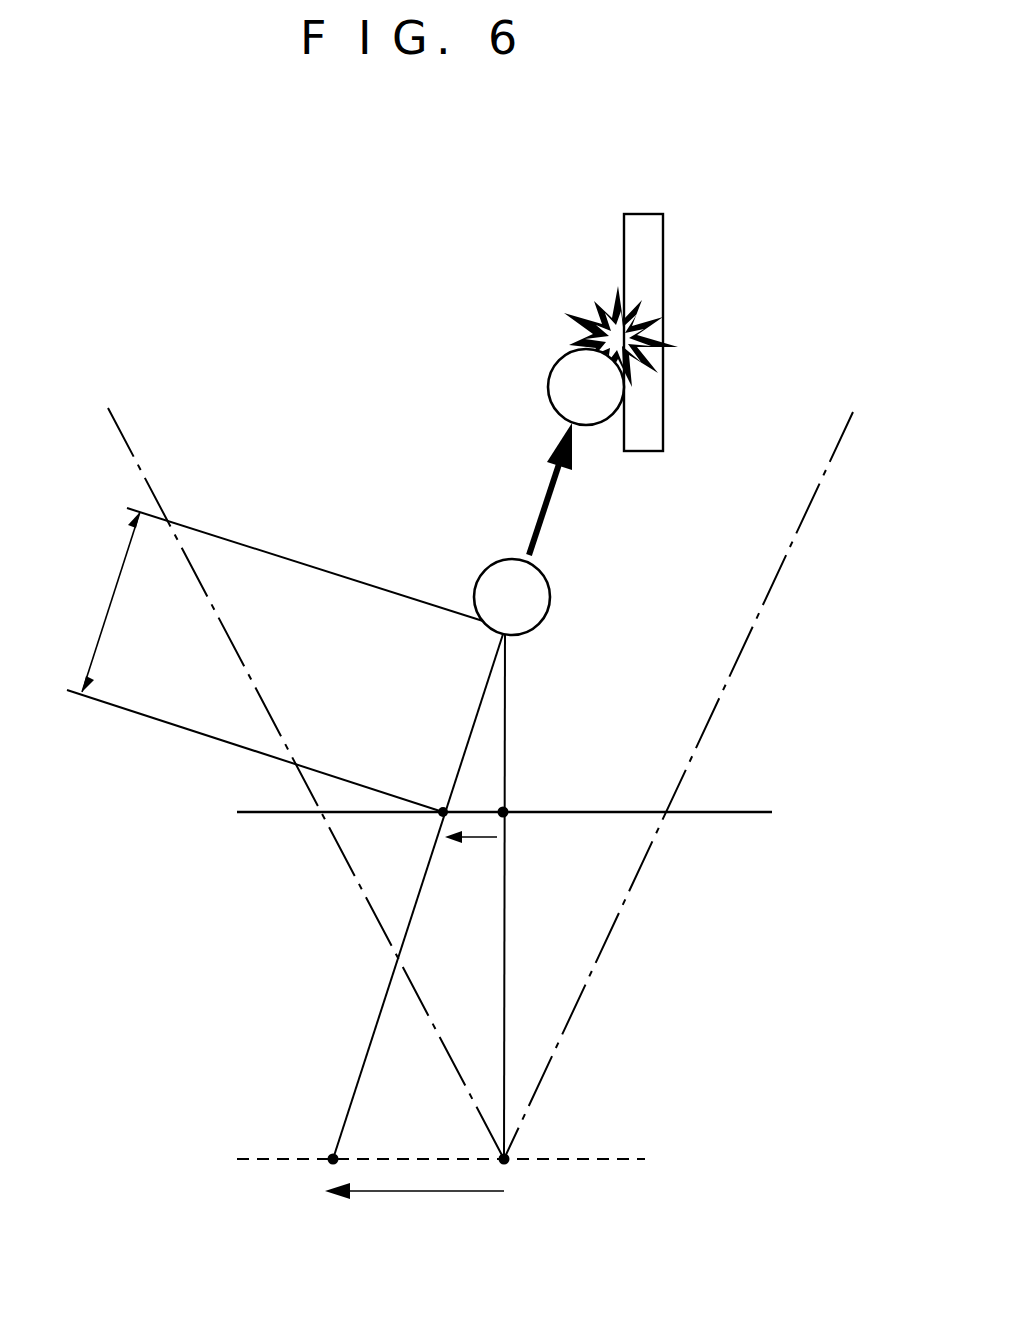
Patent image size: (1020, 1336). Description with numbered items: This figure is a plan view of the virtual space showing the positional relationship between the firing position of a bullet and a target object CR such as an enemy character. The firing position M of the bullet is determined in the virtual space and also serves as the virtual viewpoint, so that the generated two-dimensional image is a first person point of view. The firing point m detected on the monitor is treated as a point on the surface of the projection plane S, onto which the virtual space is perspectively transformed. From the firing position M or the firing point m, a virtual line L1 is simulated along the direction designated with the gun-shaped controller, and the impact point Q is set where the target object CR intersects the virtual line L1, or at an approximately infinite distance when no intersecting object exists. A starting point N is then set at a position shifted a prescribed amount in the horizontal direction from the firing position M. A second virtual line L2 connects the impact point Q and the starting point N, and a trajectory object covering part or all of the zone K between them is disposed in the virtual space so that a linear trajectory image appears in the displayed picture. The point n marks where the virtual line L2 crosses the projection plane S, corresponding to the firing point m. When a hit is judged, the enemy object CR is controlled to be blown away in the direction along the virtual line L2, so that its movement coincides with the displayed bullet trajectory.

The target object CR is at (556, 390).
The impact point Q is at (505, 630).
The projection plane S is at (738, 813).
The zone K is at (104, 602).
The virtual line L1 is at (505, 1008).
The virtual line L2 is at (382, 1004).
The intersection point of L2 and surface S n is at (443, 815).
The firing point m is at (505, 813).
The starting point N is at (333, 1162).
The firing position M is at (504, 1162).